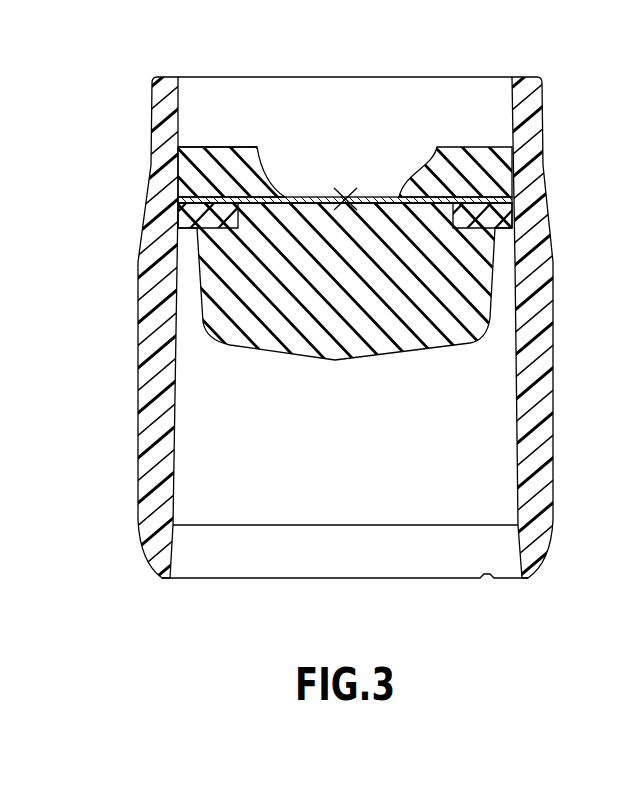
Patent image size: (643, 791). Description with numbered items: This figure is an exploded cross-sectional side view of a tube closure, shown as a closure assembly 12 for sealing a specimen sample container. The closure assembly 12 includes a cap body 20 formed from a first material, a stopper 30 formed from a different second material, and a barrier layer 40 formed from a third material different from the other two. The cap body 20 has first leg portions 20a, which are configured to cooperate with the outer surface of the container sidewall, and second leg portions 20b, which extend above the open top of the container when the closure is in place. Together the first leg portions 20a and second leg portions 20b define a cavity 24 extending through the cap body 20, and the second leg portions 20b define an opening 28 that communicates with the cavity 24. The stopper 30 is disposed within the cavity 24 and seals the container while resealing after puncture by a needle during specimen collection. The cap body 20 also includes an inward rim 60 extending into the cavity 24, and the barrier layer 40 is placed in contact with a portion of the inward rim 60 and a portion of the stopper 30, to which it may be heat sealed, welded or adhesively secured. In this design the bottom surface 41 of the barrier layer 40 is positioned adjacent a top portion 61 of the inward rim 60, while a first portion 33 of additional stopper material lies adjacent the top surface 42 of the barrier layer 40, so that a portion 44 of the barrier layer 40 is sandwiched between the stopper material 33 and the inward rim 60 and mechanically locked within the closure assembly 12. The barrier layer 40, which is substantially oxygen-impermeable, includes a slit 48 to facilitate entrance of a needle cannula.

The closure assembly 12 is at (80, 177).
The cap body 20 is at (170, 258).
The first leg portions 20a is at (544, 383).
The second leg portions 20b is at (528, 88).
The cavity 24 is at (414, 106).
The opening 28 is at (333, 126).
The stopper 30 is at (482, 262).
The first portion of stopper material 33 is at (200, 158).
The barrier layer 40 is at (432, 160).
The bottom surface 41 is at (483, 209).
The top surface 42 is at (202, 193).
The portion of the barrier layer 44 is at (180, 201).
The slit 48 is at (345, 198).
The inward rim 60 is at (210, 218).
The top portion 61 is at (397, 193).